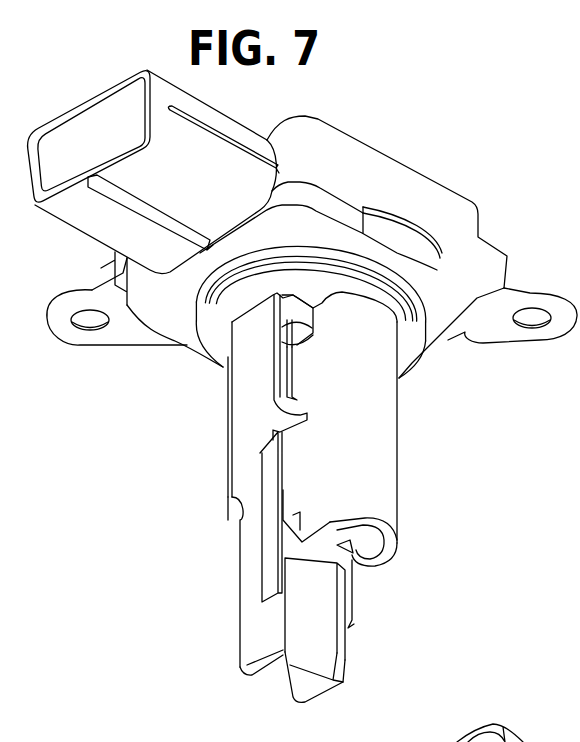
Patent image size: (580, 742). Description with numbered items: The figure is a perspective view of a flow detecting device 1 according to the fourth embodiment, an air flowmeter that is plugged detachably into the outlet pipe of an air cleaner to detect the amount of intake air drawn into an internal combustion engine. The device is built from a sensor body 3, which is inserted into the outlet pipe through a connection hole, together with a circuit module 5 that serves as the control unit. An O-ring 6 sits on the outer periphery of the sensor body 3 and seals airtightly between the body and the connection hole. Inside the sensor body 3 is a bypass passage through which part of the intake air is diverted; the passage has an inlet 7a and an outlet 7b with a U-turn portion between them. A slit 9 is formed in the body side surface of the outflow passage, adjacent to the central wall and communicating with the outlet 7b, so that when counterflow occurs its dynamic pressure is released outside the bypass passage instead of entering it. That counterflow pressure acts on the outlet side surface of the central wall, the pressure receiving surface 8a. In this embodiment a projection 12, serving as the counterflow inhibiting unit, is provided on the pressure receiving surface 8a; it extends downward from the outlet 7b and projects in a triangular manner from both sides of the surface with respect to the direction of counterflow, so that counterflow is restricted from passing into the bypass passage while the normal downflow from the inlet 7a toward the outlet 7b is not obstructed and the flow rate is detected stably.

The flow detecting device 1 is at (374, 98).
The sensor body 3 is at (376, 429).
The circuit module 5 is at (430, 183).
The O-ring 6 is at (397, 290).
The inlet 7a is at (283, 673).
The outlet 7b is at (365, 543).
The pressure receiving surface 8a is at (307, 553).
The slit 9 is at (293, 537).
The projection 12 is at (308, 622).